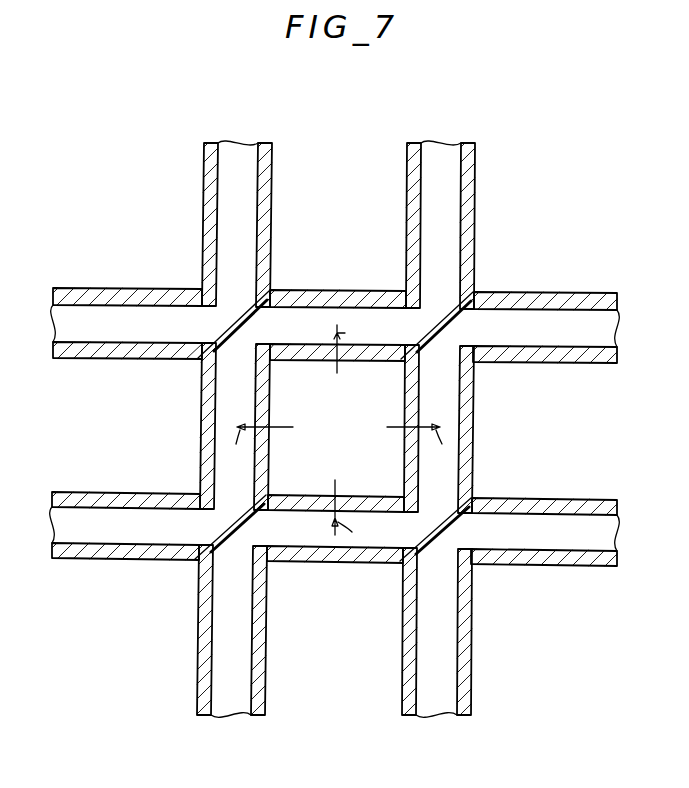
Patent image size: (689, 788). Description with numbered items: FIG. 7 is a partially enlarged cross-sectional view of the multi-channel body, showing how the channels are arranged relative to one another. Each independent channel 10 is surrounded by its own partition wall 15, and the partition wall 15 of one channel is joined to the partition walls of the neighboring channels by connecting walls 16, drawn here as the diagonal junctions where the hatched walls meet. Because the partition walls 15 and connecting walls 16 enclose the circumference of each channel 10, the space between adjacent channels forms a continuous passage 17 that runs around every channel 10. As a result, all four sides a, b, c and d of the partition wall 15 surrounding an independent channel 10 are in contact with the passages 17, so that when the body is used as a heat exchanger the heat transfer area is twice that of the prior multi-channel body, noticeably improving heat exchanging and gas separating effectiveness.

The independent channel 10 is at (525, 283).
The partition wall 15 is at (300, 344).
The connecting wall 16 is at (447, 308).
The passage 17 is at (600, 337).